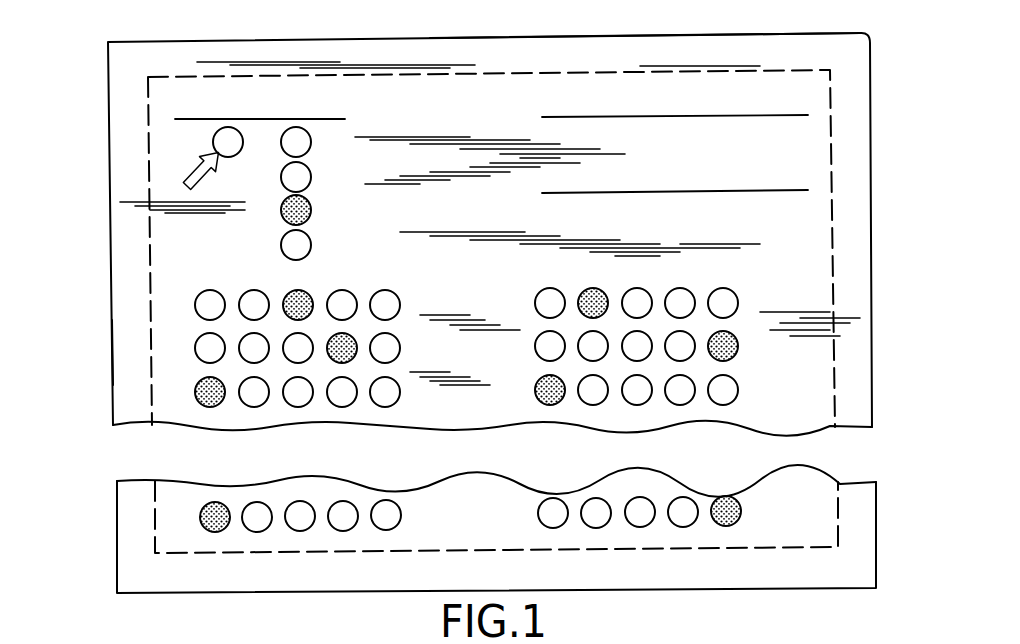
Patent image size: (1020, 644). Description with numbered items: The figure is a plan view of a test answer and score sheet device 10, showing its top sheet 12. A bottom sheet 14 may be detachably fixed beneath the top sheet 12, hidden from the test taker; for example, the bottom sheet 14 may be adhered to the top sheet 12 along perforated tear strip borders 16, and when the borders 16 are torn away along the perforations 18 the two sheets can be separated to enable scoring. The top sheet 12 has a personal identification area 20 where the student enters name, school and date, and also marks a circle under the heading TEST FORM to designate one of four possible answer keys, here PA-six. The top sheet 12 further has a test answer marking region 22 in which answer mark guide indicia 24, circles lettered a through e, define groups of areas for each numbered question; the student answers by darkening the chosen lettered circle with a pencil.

The test answer and score sheet device 10 is at (92, 134).
The top sheet 12 is at (112, 250).
The bottom sheet 14 is at (113, 347).
The perforated tear strip borders 16 is at (450, 27).
The perforations 18 is at (492, 73).
The personal identification area 20 is at (707, 167).
The test answer marking region 22 is at (238, 492).
The answer mark guide indicia 24 is at (382, 289).